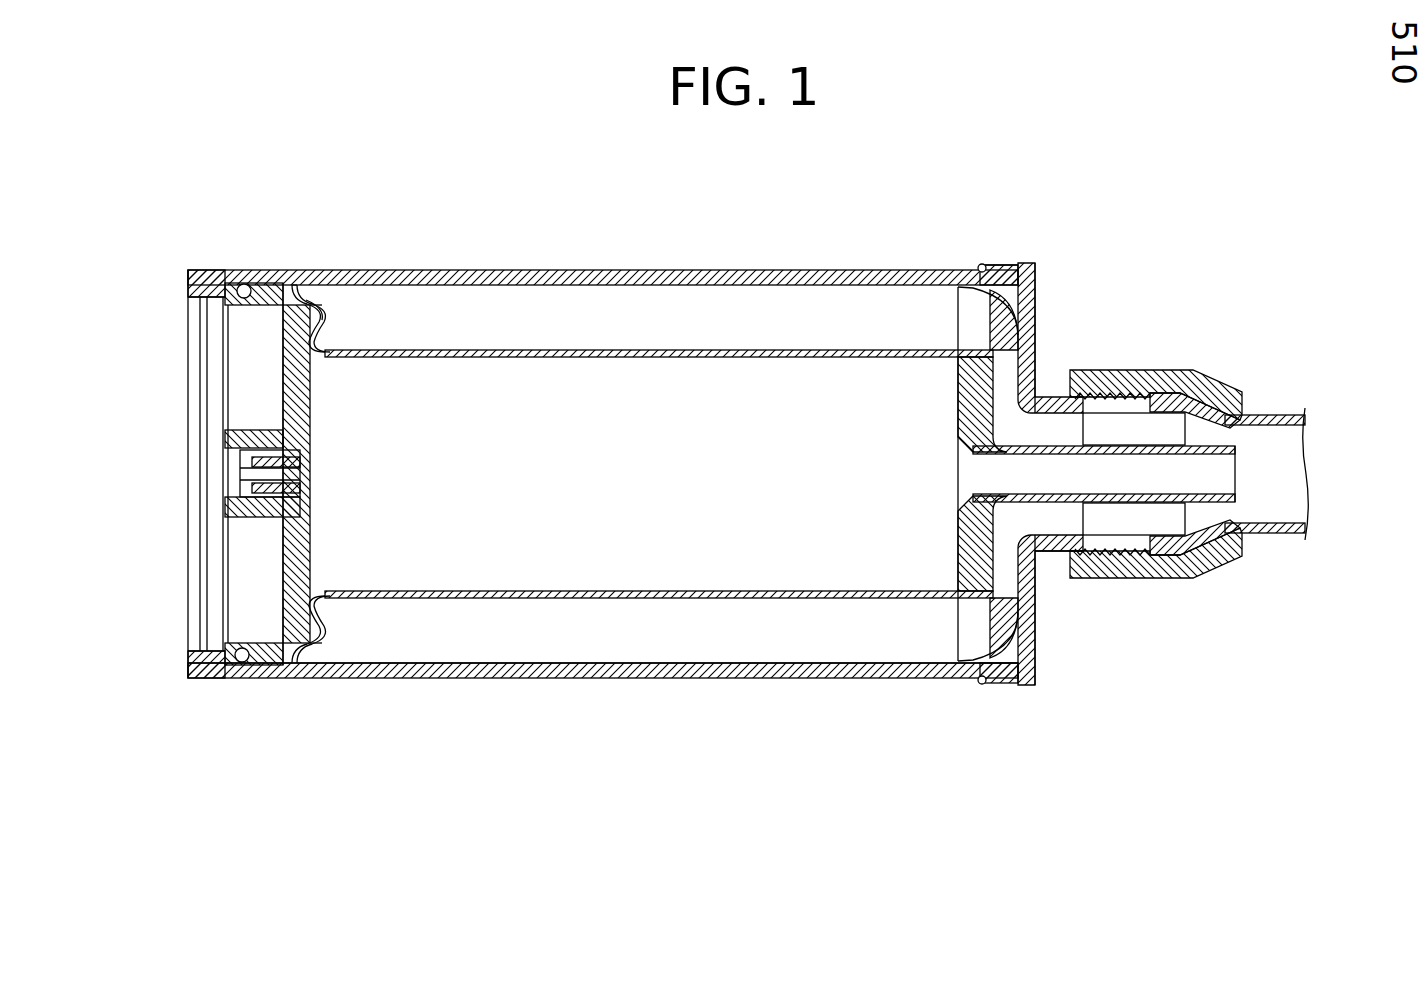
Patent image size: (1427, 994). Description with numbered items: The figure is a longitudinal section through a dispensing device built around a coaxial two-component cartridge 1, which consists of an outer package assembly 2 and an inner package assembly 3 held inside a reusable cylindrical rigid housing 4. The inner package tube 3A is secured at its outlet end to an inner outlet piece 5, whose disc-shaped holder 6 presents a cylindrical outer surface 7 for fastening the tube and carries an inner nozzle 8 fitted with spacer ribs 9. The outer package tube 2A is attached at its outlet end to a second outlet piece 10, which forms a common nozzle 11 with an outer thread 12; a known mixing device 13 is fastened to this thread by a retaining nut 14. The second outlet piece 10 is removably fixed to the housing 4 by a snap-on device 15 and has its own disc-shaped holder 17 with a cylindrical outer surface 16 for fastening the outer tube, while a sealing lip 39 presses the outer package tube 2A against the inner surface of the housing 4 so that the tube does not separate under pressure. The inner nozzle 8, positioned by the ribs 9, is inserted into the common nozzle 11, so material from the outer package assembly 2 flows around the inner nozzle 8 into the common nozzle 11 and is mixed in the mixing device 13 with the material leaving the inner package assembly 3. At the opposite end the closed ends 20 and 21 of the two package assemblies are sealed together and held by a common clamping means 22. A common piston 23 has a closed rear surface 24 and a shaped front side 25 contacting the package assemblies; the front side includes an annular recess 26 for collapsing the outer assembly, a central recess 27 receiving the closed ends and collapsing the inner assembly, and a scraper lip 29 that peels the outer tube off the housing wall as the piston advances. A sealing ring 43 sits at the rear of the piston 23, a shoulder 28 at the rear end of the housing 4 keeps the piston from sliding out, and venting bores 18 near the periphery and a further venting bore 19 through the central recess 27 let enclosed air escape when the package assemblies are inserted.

The coaxial two-component cartridge 1 is at (810, 685).
The outer package assembly 2 is at (657, 340).
The outer package tube 2A is at (626, 272).
The inner package assembly 3 is at (657, 496).
The inner package tube 3A is at (577, 590).
The rigid housing 4 is at (600, 677).
The inner outlet piece 5 is at (1000, 380).
The disc-shaped holder 6 is at (970, 380).
The cylindrical outer surface 7 is at (957, 662).
The inner nozzle 8 is at (1205, 470).
The spacer ribs 9 is at (1045, 592).
The second outlet piece 10 is at (1040, 297).
The common nozzle 11 is at (1055, 545).
The outer thread 12 is at (1150, 398).
The mixing device 13 is at (1295, 413).
The retaining nut 14 is at (1210, 396).
The snap-on device 15 is at (984, 265).
The cylindrical outer surface 16 is at (962, 275).
The disc-shaped holder 17 is at (1034, 668).
The venting bores 18 is at (291, 280).
The venting bore 19 is at (242, 470).
The closed end of outer package assembly 20 is at (312, 345).
The closed end of inner package assembly 21 is at (311, 552).
The common clamping means 22 is at (275, 494).
The common piston 23 is at (240, 660).
The rear surface 24 is at (280, 365).
The front side 25 is at (313, 440).
The annular recess 26 is at (325, 318).
The central recess 27 is at (233, 440).
The shoulder 28 is at (214, 650).
The scraper lip 29 is at (330, 280).
The sealing lip 39 is at (979, 682).
The sealing ring 43 is at (238, 280).